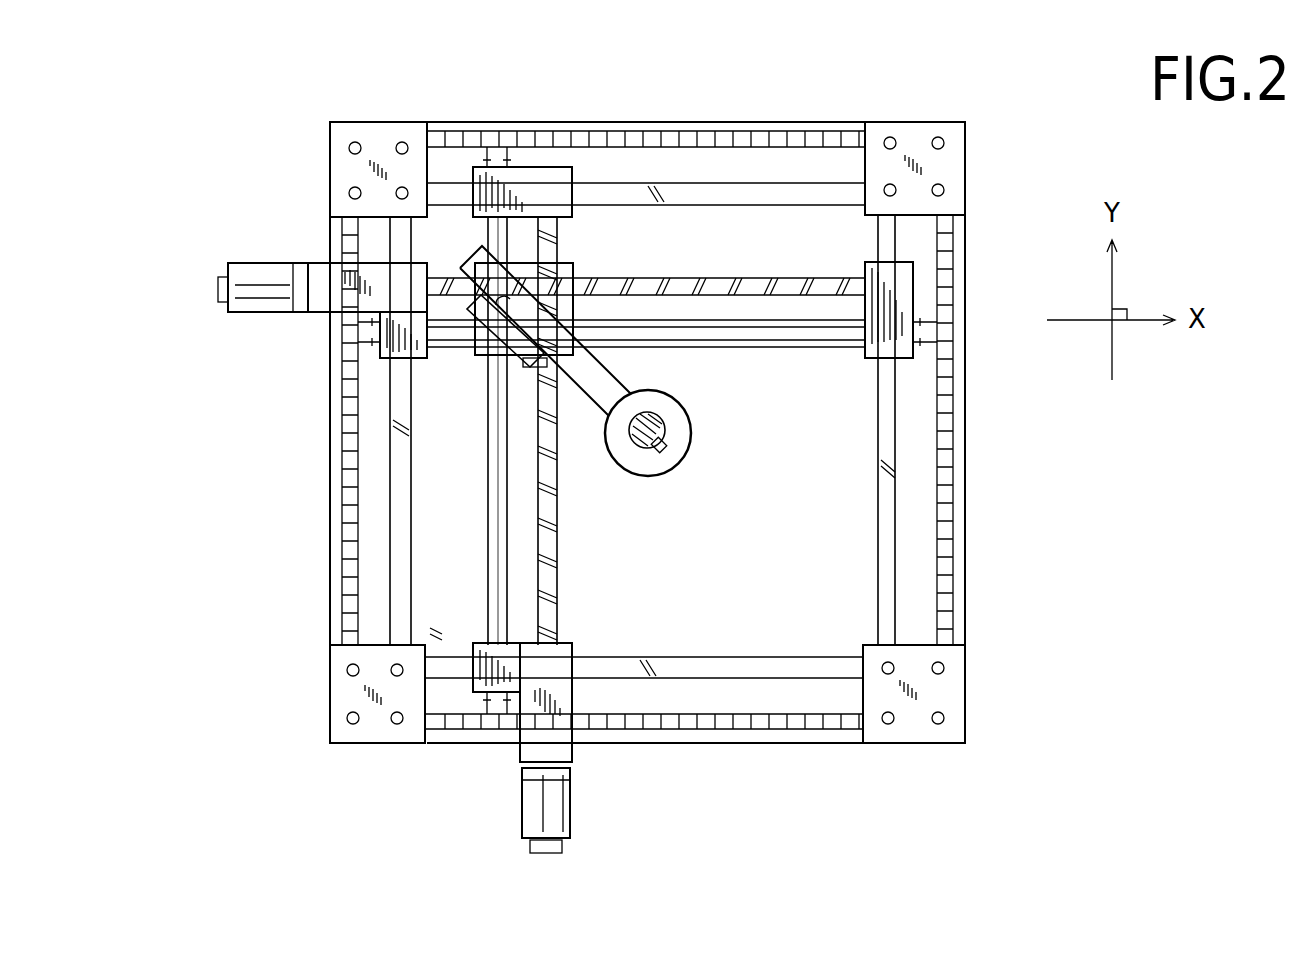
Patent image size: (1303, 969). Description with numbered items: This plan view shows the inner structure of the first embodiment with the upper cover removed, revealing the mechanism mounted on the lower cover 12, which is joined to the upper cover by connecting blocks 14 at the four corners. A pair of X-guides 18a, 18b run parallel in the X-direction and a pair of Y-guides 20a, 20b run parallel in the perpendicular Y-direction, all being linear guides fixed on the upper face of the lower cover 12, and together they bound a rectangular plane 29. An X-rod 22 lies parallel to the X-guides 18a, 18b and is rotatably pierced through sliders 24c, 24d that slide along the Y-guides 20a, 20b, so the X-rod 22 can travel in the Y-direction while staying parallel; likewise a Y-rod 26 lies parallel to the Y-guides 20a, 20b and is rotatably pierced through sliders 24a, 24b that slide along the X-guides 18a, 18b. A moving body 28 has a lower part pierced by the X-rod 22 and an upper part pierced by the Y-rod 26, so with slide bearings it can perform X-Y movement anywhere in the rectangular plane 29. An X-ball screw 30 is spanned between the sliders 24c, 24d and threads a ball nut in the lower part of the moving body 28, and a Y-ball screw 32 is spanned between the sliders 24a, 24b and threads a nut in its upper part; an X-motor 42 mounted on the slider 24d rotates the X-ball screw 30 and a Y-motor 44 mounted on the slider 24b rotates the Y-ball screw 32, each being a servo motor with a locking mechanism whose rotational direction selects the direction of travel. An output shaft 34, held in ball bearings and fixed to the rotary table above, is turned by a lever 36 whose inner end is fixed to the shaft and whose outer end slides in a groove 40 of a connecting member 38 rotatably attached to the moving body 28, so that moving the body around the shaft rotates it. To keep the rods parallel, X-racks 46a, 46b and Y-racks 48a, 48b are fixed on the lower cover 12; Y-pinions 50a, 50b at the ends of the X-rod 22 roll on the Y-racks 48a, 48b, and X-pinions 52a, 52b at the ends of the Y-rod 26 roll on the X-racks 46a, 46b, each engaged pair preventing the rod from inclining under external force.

The lower cover 12 is at (965, 582).
The connecting blocks 14 is at (340, 172).
The X-guide 18a is at (790, 190).
The X-guide 18b is at (775, 680).
The Y-guide 20a is at (878, 585).
The Y-guide 20b is at (390, 593).
The X-rod 22 is at (825, 346).
The slider 24a is at (548, 182).
The slider 24b is at (487, 678).
The slider 24c is at (912, 360).
The slider 24d is at (405, 358).
The Y-rod 26 is at (490, 557).
The moving body 28 is at (591, 265).
The rectangular plane 29 is at (450, 612).
The X-ball screw 30 is at (800, 282).
The Y-ball screw 32 is at (557, 565).
The output shaft 34 is at (665, 437).
The lever 36 is at (603, 384).
The connecting member 38 is at (520, 373).
The groove 40 is at (500, 343).
The X-motor 42 is at (243, 273).
The Y-motor 44 is at (575, 805).
The X-rack 46a is at (713, 140).
The X-rack 46b is at (838, 730).
The Y-rack 48a is at (945, 487).
The Y-rack 48b is at (348, 233).
The Y-pinion 50a is at (920, 334).
The Y-pinion 50b is at (350, 332).
The X-pinion 52a is at (498, 137).
The X-pinion 52b is at (497, 730).